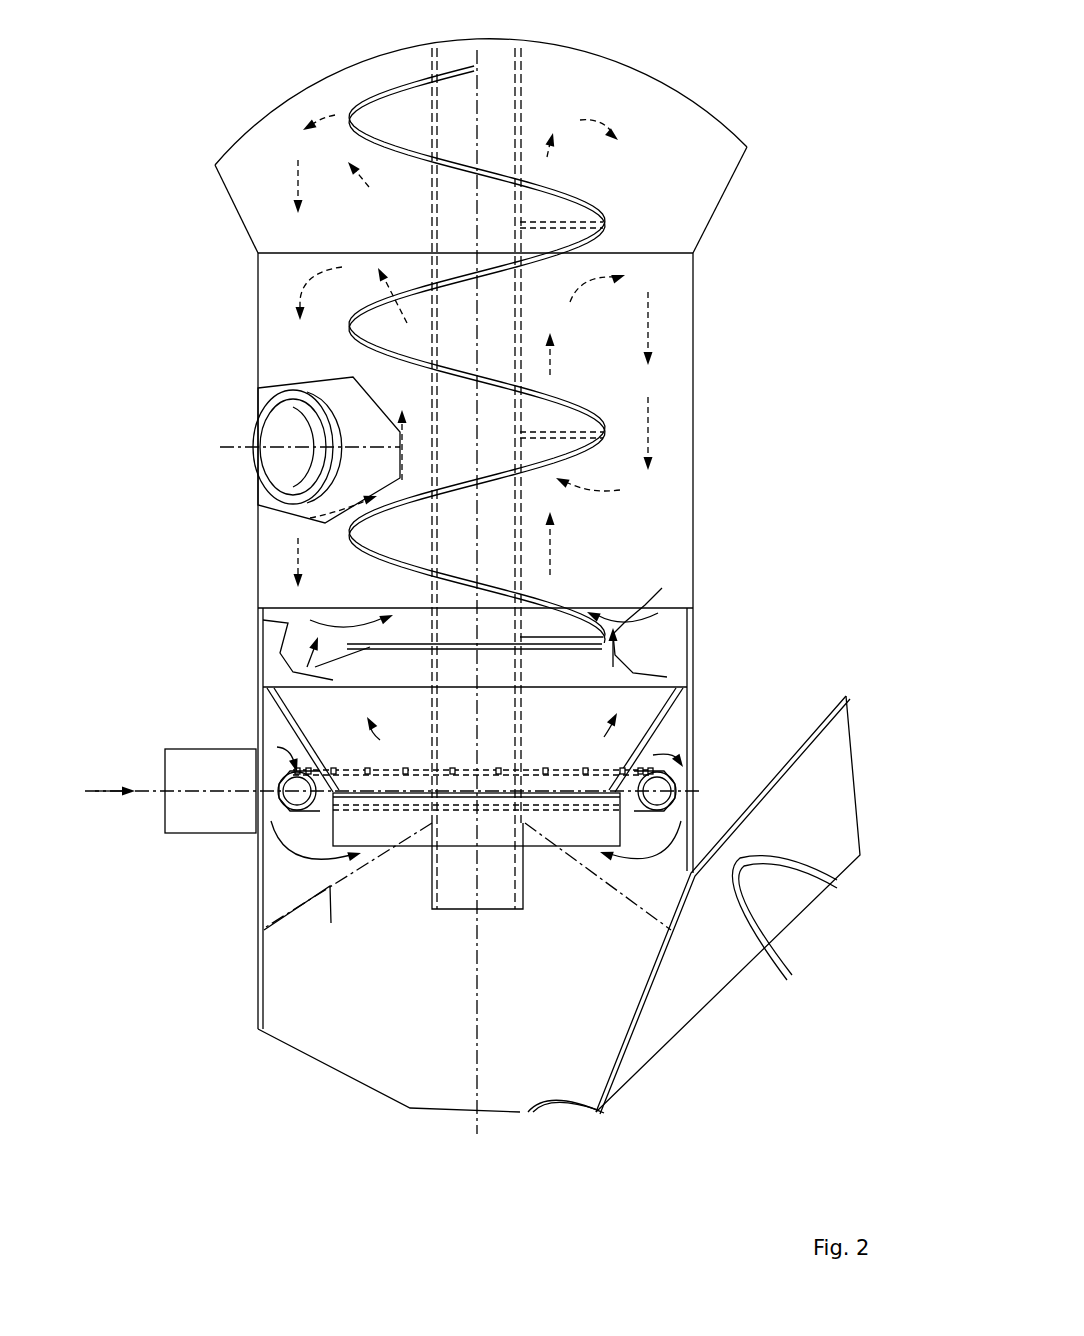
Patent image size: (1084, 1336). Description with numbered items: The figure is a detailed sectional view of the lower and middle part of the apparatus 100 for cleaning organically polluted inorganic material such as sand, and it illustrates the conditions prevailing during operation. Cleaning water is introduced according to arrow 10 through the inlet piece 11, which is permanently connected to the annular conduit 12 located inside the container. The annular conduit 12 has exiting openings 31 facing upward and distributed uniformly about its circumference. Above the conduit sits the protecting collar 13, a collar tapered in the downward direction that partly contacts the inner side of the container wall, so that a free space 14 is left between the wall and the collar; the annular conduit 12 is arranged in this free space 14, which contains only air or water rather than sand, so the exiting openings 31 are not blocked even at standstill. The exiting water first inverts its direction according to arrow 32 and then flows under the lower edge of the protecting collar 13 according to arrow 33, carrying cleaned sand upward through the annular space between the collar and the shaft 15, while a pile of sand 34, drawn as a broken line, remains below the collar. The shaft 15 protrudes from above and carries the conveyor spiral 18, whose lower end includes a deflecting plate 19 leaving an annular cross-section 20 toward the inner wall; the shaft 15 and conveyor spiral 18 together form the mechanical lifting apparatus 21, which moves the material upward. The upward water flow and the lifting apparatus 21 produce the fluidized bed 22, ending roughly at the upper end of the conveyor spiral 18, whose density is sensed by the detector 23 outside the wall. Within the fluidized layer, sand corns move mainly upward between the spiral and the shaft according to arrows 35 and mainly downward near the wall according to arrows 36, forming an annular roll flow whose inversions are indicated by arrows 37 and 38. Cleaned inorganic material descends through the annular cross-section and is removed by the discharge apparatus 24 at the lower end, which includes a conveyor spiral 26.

The apparatus 100 is at (150, 114).
The arrow 10 is at (95, 791).
The inlet piece 11 is at (208, 812).
The annular conduit 12 is at (657, 789).
The protecting collar 13 is at (307, 708).
The free space 14 is at (272, 728).
The shaft 15 is at (472, 478).
The conveyor spiral 18 is at (370, 323).
The deflecting plate 19 is at (370, 647).
The annular cross-section 20 is at (330, 680).
The lifting apparatus 21 is at (713, 567).
The fluidized bed 22 is at (592, 377).
The detector 23 is at (277, 437).
The discharge apparatus 24 is at (772, 1035).
The conveyor spiral 26 is at (766, 894).
The exiting openings 31 is at (553, 768).
The arrow 32 is at (277, 747).
The arrow 33 is at (284, 849).
The pile of sand 34 is at (344, 962).
The arrows 35 is at (800, 517).
The arrows 36 is at (313, 277).
The arrows 37 is at (328, 117).
The arrows 38 is at (327, 522).